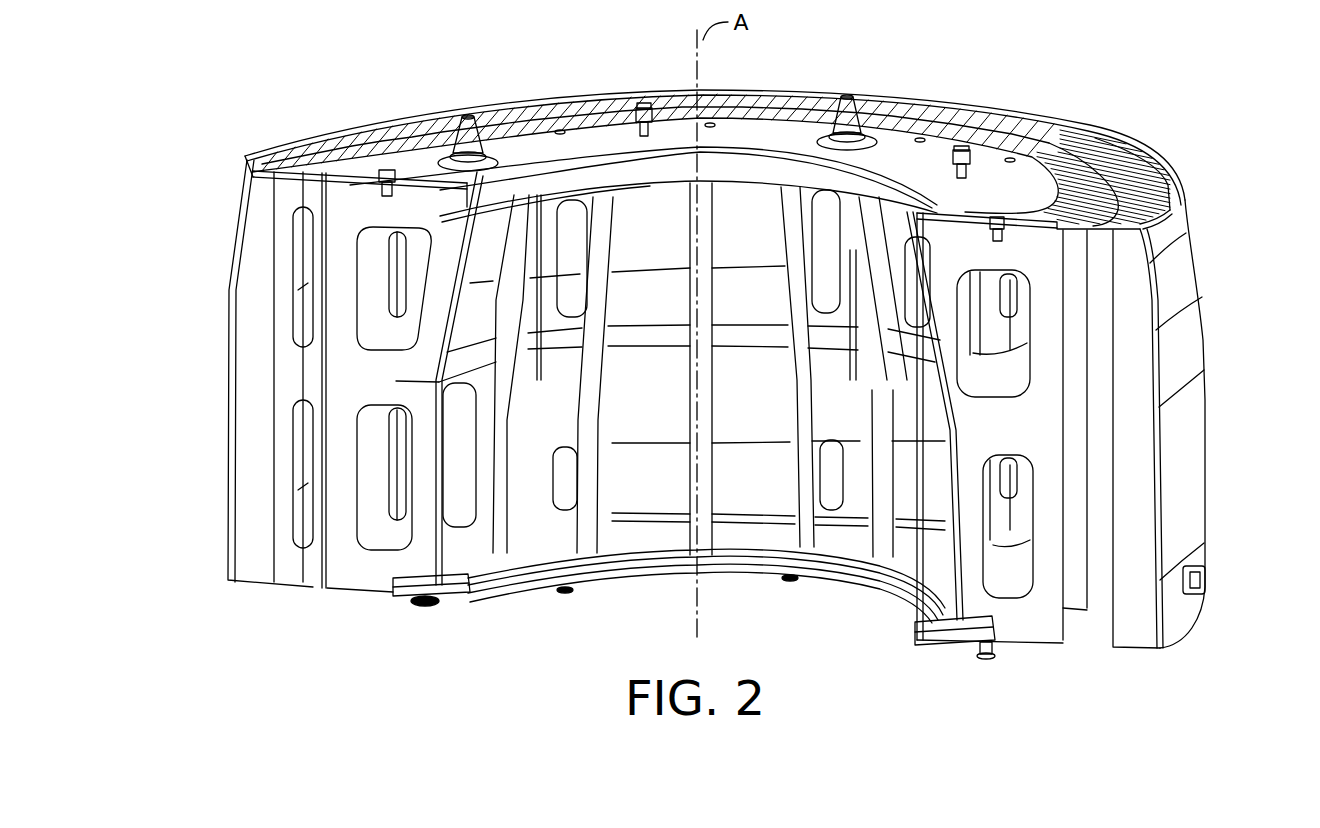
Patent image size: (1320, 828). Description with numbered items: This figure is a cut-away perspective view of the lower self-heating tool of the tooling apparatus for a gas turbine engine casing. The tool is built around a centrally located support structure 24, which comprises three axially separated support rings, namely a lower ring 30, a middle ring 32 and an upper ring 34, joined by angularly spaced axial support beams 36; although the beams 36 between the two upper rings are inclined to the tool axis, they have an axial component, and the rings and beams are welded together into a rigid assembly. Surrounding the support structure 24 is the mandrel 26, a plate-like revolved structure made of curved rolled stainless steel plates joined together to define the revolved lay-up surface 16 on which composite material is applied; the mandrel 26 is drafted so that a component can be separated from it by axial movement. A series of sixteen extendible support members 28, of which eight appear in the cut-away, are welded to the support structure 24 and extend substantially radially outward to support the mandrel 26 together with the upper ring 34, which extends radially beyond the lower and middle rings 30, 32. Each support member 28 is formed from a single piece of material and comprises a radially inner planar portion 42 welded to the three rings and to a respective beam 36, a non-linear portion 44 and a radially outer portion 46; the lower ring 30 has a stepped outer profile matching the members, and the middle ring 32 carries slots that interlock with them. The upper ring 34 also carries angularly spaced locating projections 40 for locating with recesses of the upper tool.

The lay-up surface 16 is at (1190, 470).
The support structure 24 is at (870, 596).
The mandrel 26 is at (1196, 346).
The extendible support member 28 is at (357, 572).
The lower ring 30 is at (657, 540).
The middle ring 32 is at (645, 340).
The upper ring 34 is at (600, 138).
The axial support beam 36 is at (803, 540).
The locating projection 40 is at (462, 135).
The radially inner planar portion 42 is at (332, 228).
The non-linear portion 44 is at (285, 368).
The radially outer portion 46 is at (250, 465).